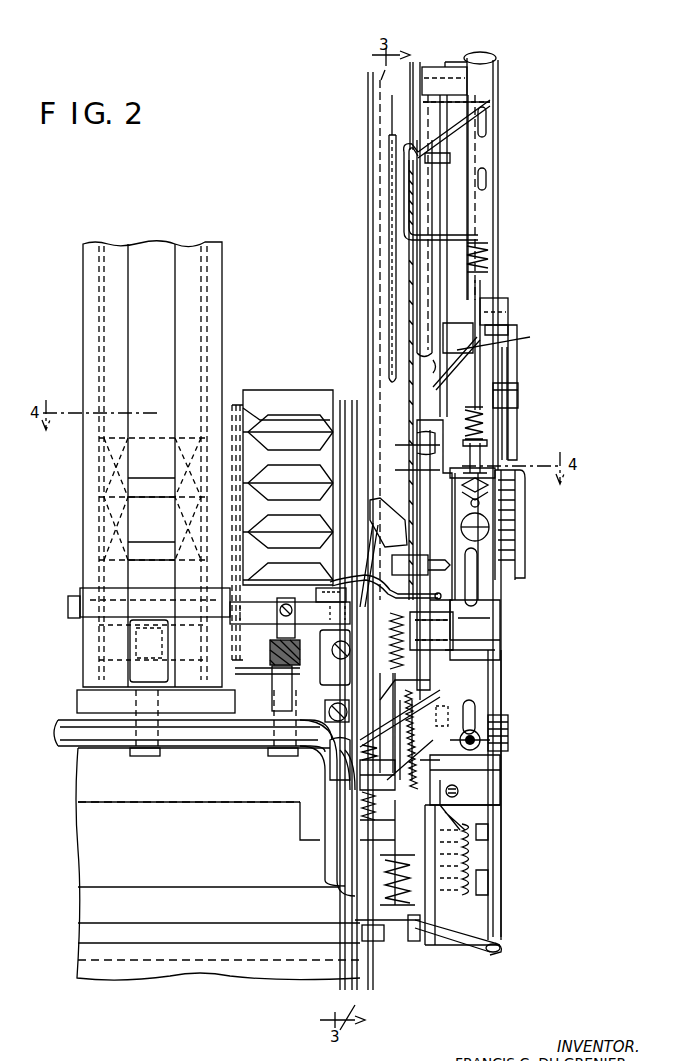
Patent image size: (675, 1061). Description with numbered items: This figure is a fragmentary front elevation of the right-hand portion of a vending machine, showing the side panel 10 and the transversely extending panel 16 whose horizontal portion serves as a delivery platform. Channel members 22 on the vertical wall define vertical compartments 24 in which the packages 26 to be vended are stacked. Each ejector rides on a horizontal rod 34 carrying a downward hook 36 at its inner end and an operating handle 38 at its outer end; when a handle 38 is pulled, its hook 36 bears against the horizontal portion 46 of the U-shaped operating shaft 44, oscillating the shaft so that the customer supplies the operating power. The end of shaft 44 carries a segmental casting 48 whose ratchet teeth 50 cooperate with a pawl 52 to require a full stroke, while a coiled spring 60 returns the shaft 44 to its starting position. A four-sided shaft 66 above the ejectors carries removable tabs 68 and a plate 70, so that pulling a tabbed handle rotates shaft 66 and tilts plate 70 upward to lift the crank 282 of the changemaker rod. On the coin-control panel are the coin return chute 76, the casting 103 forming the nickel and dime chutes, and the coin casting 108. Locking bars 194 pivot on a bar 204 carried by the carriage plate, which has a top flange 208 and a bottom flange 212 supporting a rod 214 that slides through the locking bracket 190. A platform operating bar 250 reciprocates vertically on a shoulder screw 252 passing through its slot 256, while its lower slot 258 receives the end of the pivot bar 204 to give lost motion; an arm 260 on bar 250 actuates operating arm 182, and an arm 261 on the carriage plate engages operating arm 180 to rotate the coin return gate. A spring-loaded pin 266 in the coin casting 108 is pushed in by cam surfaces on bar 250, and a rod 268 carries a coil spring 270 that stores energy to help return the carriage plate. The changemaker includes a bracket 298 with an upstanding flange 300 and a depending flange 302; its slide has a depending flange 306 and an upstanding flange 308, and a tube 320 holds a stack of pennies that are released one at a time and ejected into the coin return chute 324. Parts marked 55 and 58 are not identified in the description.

The side panel 10 is at (366, 200).
The transversely extending panel 16 is at (82, 866).
The channel members 22 is at (240, 405).
The vertical compartments 24 is at (150, 246).
The packages 26 is at (292, 400).
The horizontal rod 34 is at (270, 680).
The hook 36 is at (146, 756).
The operating handle 38 is at (126, 692).
The U-shaped operating shaft 44 is at (322, 848).
The horizontal portion of operating shaft 46 is at (56, 724).
The segmental casting 48 is at (358, 918).
The ratchet teeth 50 is at (335, 752).
The pawl 52 is at (358, 788).
The side plate 55 is at (338, 540).
The stop block 58 is at (430, 940).
The coiled spring 60 is at (382, 886).
The four-sided shaft 66 is at (68, 603).
The removable tabs 68 is at (277, 612).
The plate 70 is at (316, 592).
The channeled member (coin return chute) 76 is at (388, 259).
The casting 103 is at (445, 147).
The coin casting 108 is at (425, 450).
The operating arm 180 is at (415, 715).
The operating arm 182 is at (436, 772).
The locking bracket 190 is at (518, 572).
The locking bars 194 is at (503, 648).
The bar (pivot bar) 204 is at (481, 741).
The flange 208 is at (510, 720).
The second flange 212 is at (455, 948).
The rod 214 is at (486, 888).
The platform operating bar 250 is at (492, 620).
The shoulder screw 252 is at (489, 527).
The slot 256 is at (478, 585).
The slot 258 is at (470, 710).
The arm 260 is at (450, 718).
The arm 261 is at (467, 792).
The pin 266 is at (443, 565).
The rod 268 is at (393, 232).
The coil spring 270 is at (483, 413).
The crank 282 is at (330, 580).
The bracket 298 is at (517, 337).
The upstanding flange 300 is at (503, 298).
The depending flange 302 is at (512, 368).
The depending flange of slide 306 is at (482, 342).
The upstanding flange of slide 308 is at (506, 316).
The tube 320 is at (498, 162).
The coin return chute 324 is at (450, 372).